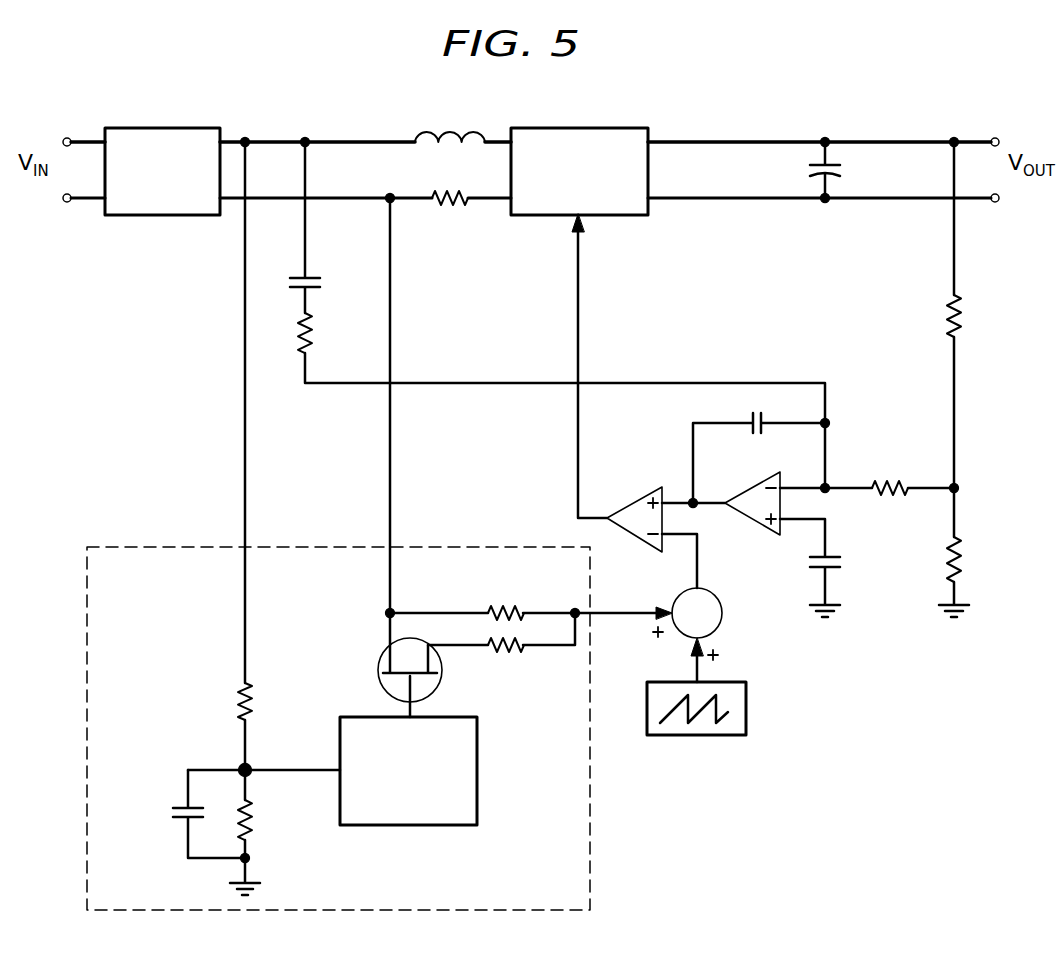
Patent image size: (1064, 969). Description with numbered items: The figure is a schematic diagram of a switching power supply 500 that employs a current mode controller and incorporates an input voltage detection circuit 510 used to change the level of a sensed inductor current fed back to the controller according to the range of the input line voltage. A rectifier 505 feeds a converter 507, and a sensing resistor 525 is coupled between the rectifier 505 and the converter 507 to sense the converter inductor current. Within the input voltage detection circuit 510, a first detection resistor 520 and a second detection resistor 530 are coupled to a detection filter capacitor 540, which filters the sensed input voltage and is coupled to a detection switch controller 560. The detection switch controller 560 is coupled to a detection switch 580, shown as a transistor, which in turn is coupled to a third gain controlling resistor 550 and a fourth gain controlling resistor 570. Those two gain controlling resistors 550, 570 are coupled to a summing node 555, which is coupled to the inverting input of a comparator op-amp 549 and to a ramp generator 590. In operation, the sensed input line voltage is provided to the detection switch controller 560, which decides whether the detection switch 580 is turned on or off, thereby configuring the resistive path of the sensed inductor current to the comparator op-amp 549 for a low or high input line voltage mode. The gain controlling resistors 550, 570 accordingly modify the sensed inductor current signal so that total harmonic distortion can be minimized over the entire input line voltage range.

The switching power supply 500 is at (880, 110).
The rectifier 505 is at (148, 128).
The converter 507 is at (565, 128).
The input voltage detection circuit 510 is at (118, 545).
The first detection resistor 520 is at (236, 692).
The sensing resistor 525 is at (450, 203).
The second detection resistor 530 is at (258, 820).
The detection filter capacitor 540 is at (172, 810).
The comparator op-amp 549 is at (634, 498).
The third gain controlling resistor 550 is at (505, 611).
The summing node 555 is at (722, 613).
The detection switch controller 560 is at (448, 828).
The fourth gain controlling resistor 570 is at (510, 655).
The detection switch 580 is at (378, 670).
The ramp generator 590 is at (746, 708).